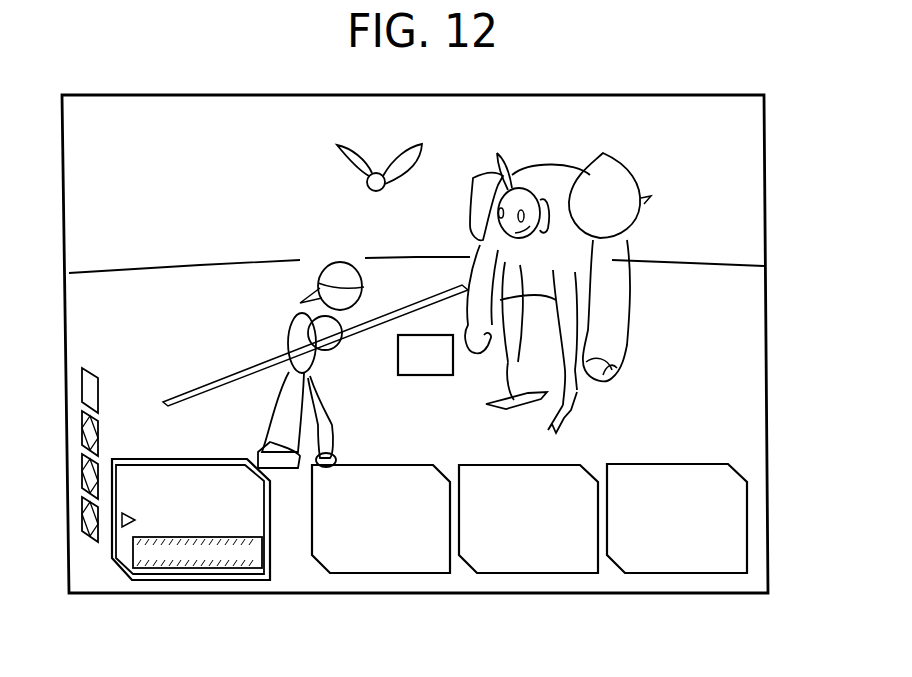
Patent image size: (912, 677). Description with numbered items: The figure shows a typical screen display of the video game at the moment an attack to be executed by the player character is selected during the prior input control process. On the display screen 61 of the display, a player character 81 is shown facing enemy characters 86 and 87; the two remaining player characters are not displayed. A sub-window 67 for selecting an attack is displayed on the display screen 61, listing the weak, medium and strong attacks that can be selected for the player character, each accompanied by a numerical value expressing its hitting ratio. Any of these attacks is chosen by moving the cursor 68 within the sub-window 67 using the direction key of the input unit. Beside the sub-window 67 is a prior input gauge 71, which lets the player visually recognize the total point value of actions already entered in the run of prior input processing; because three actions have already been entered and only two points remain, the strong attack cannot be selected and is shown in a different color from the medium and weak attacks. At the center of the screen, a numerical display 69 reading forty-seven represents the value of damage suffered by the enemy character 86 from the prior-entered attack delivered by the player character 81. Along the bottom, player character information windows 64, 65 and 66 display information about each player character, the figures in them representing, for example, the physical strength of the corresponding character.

The display screen 61 is at (764, 118).
The player character information window 64 is at (397, 575).
The player character information window 65 is at (533, 575).
The player character information window 66 is at (690, 574).
The sub-window for selecting an attack 67 is at (201, 581).
The cursor 68 is at (127, 509).
The numerical display 69 is at (420, 377).
The prior input gauge 71 is at (82, 474).
The player character 81 is at (292, 334).
The enemy character 86 is at (640, 174).
The enemy character 87 is at (345, 162).